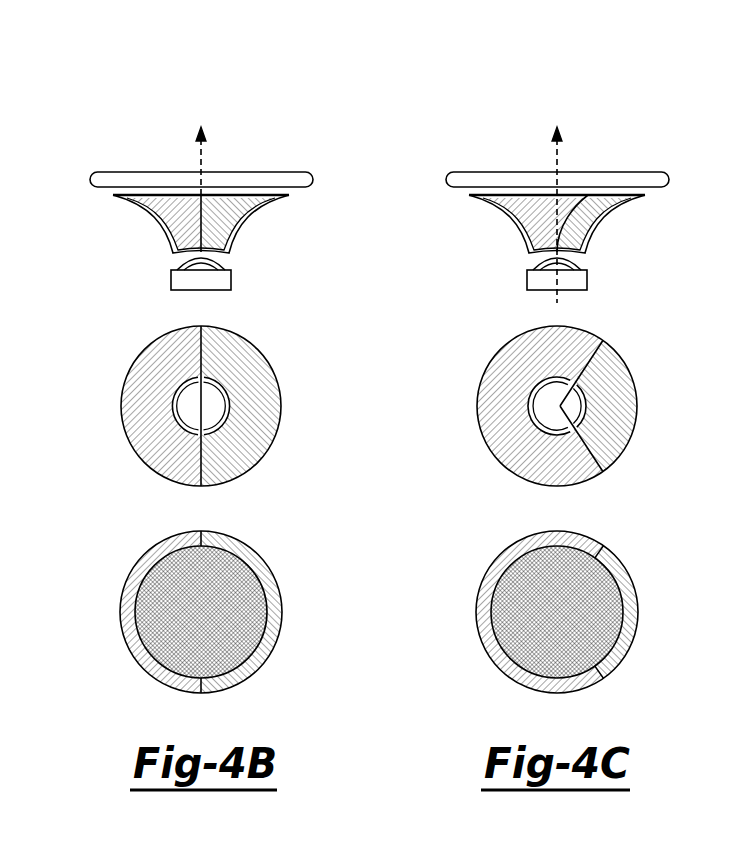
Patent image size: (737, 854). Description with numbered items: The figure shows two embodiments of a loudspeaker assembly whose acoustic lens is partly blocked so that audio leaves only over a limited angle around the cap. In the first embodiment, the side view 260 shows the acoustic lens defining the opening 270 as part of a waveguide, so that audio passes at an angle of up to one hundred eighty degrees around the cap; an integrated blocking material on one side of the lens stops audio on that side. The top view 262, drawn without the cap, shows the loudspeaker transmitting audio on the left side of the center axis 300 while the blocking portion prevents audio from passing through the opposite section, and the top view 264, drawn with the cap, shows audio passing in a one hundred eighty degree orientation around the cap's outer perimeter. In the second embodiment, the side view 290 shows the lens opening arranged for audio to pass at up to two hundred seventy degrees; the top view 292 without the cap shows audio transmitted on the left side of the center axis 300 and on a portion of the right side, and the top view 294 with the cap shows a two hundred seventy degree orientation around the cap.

In FIG. 4B, the side view of the loudspeaker assembly 260 is at (153, 150).
In FIG. 4B, the top view of the loudspeaker assembly without the cap 262 is at (112, 344).
In FIG. 4B, the top view of the loudspeaker assembly with the cap 264 is at (104, 585).
In FIG. 4B, the opening 270 is at (110, 192).
In FIG. 4C, the opening 270 is at (401, 179).
In FIG. 4C, the side view of the loudspeaker assembly 290 is at (520, 188).
In FIG. 4C, the top view of the loudspeaker assembly without the cap 292 is at (543, 396).
In FIG. 4C, the top view of the loudspeaker assembly with the cap 294 is at (542, 615).
In FIG. 4B, the center axis 300 is at (204, 155).
In FIG. 4C, the center axis 300 is at (601, 202).